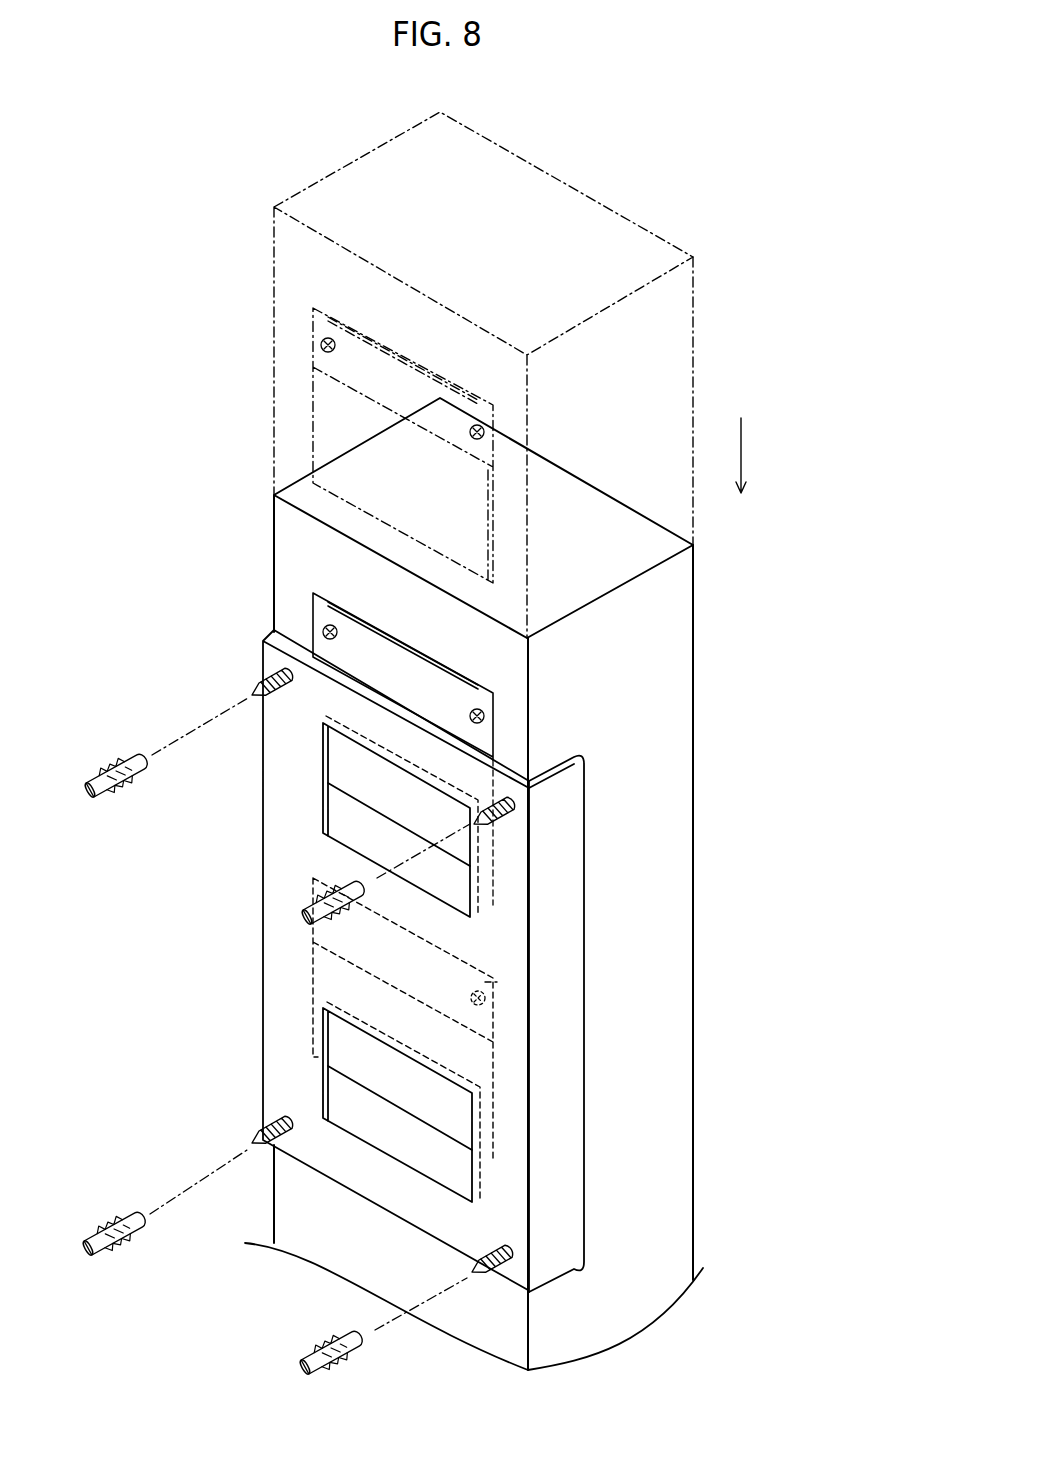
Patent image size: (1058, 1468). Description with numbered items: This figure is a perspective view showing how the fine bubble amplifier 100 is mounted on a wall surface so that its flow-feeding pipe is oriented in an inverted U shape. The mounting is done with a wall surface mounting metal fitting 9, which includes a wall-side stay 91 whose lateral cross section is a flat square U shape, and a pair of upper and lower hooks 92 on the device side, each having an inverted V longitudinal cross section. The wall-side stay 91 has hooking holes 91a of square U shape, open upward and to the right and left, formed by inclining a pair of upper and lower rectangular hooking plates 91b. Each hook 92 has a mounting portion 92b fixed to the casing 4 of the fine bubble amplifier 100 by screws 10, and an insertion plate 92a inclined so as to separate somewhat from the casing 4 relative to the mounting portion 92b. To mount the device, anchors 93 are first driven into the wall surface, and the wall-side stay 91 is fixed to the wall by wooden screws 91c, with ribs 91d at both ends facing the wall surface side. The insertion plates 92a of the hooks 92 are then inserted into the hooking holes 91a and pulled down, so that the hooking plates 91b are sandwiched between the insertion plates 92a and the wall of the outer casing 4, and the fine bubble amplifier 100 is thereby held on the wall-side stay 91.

The fine bubble amplifier 100 is at (618, 210).
The casing 4 is at (690, 364).
The wall surface mounting metal fitting 9 is at (240, 629).
The wall-side stay 91 is at (249, 664).
The hooking holes 91a is at (325, 795).
The hooking plates 91b is at (325, 822).
The wooden screws 91c is at (258, 683).
The ribs 91d is at (567, 808).
The hooks 92 is at (299, 373).
The insertion plate 92a is at (330, 437).
The mounting portion 92b is at (405, 373).
The anchors 93 is at (118, 788).
The screws 10 is at (329, 338).